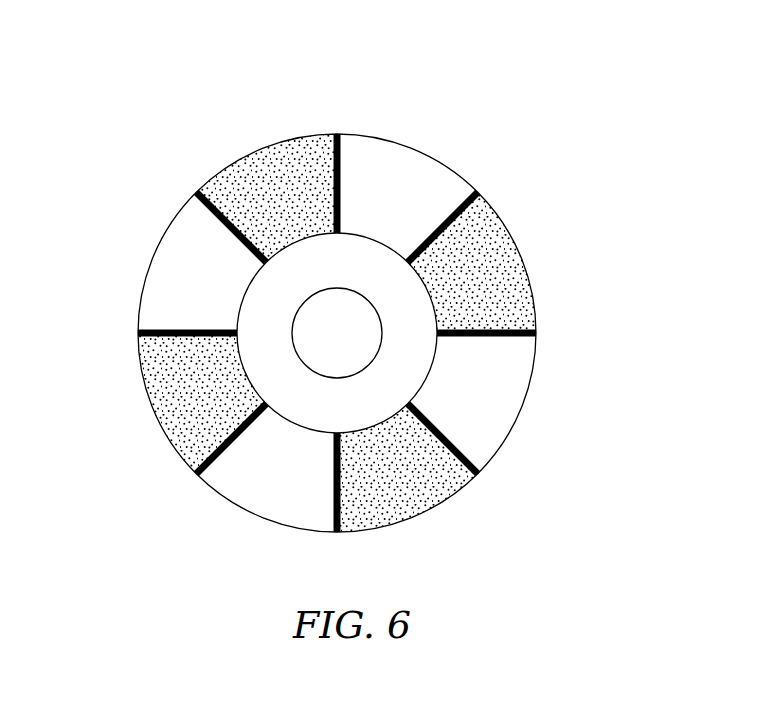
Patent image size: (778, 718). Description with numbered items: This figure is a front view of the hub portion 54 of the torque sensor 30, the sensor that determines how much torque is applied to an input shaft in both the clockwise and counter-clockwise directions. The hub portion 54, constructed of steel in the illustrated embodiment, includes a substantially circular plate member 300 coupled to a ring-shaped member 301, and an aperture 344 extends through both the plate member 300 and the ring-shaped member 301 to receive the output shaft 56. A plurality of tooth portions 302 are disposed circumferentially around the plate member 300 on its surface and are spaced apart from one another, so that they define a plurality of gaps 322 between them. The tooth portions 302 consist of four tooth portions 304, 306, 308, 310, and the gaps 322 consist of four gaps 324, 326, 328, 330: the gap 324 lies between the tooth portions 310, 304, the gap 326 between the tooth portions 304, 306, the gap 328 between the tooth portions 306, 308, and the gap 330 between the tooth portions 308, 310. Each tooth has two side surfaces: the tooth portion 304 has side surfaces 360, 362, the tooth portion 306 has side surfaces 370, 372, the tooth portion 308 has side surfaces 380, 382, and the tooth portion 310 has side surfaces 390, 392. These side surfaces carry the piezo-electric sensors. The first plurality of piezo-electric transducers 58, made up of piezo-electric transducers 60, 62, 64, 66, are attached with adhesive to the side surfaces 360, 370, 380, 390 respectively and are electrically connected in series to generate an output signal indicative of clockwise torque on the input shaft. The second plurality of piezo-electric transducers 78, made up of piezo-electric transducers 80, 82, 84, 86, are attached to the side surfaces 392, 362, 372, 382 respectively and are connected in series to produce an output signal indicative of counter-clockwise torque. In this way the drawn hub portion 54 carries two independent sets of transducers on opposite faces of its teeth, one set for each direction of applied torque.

The torque sensor 30 is at (474, 57).
The hub portion 54 is at (399, 117).
The output shaft 56 is at (338, 352).
The first plurality of piezo-electric transducers 58 is at (476, 188).
The piezo-electric transducer 60 is at (448, 220).
The piezo-electric transducer 62 is at (477, 473).
The piezo-electric transducer 64 is at (197, 475).
The piezo-electric transducer 66 is at (198, 194).
The second plurality of piezo-electric transducers 78 is at (355, 136).
The piezo-electric transducer 80 is at (342, 141).
The piezo-electric transducer 82 is at (533, 336).
The piezo-electric transducer 84 is at (336, 533).
The piezo-electric transducer 86 is at (140, 332).
The plate member 300 is at (540, 394).
The ring-shaped member 301 is at (416, 366).
The plurality of tooth portions 302 is at (532, 272).
The tooth portion 304 is at (530, 288).
The tooth portion 306 is at (425, 515).
The tooth portion 308 is at (150, 405).
The tooth portion 310 is at (228, 205).
The plurality of gaps 322 is at (421, 148).
The gap 324 is at (445, 162).
The gap 326 is at (512, 430).
The gap 328 is at (260, 518).
The gap 330 is at (150, 260).
The aperture 344 is at (327, 290).
The side surface 360 is at (524, 247).
The side surface 362 is at (504, 330).
The side surface 370 is at (445, 450).
The side surface 372 is at (358, 503).
The side surface 380 is at (205, 445).
The side surface 382 is at (170, 337).
The side surface 390 is at (195, 186).
The side surface 392 is at (330, 160).